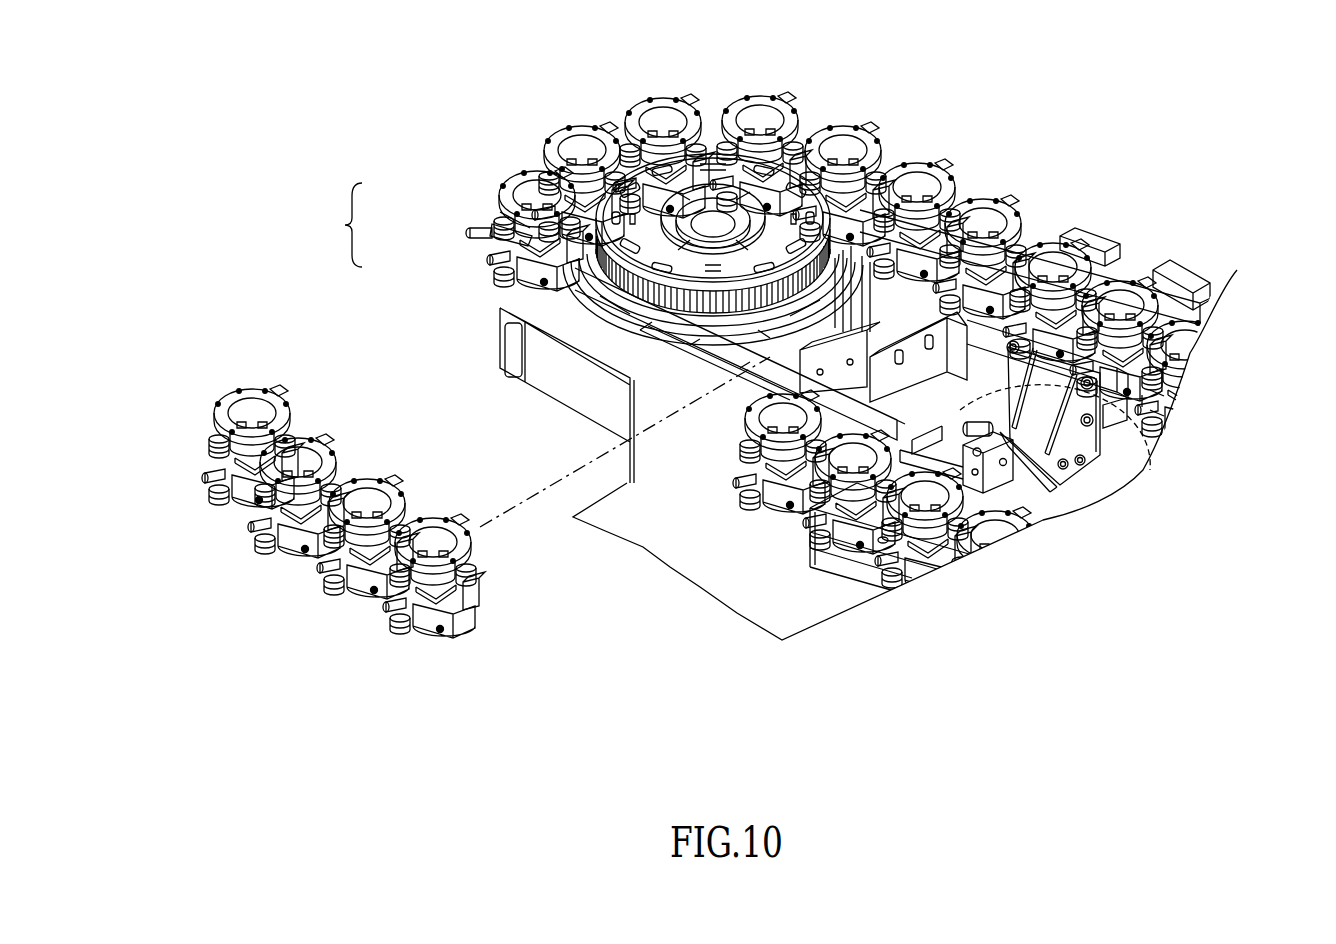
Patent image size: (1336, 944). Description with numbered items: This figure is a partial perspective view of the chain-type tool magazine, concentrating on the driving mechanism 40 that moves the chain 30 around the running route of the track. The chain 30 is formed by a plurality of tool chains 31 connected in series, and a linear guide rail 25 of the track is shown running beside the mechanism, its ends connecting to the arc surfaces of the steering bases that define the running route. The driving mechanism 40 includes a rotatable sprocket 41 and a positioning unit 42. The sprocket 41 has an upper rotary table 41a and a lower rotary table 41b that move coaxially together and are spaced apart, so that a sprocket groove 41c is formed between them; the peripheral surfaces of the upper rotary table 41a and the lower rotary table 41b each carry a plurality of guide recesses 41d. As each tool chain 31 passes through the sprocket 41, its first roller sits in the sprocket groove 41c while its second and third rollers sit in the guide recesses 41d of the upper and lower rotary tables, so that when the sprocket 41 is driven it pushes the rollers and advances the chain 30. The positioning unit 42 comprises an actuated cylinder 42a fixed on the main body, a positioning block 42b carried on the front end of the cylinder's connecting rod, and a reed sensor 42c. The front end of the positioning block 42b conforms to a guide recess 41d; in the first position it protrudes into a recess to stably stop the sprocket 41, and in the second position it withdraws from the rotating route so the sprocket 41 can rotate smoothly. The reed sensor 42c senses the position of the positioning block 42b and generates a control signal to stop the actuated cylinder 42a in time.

The linear guide rail 25 is at (988, 297).
The chain 30 is at (640, 92).
The tool chain 31 is at (238, 390).
The driving mechanism 40 is at (775, 185).
The rotatable sprocket 41 is at (341, 225).
The upper rotary table 41a is at (482, 217).
The lower rotary table 41b is at (590, 320).
The sprocket groove 41c is at (593, 322).
The guide recess 41d is at (590, 320).
The positioning unit 42 is at (1010, 477).
The actuated cylinder 42a is at (1083, 470).
The positioning block 42b is at (848, 358).
The reed sensor 42c is at (1167, 417).